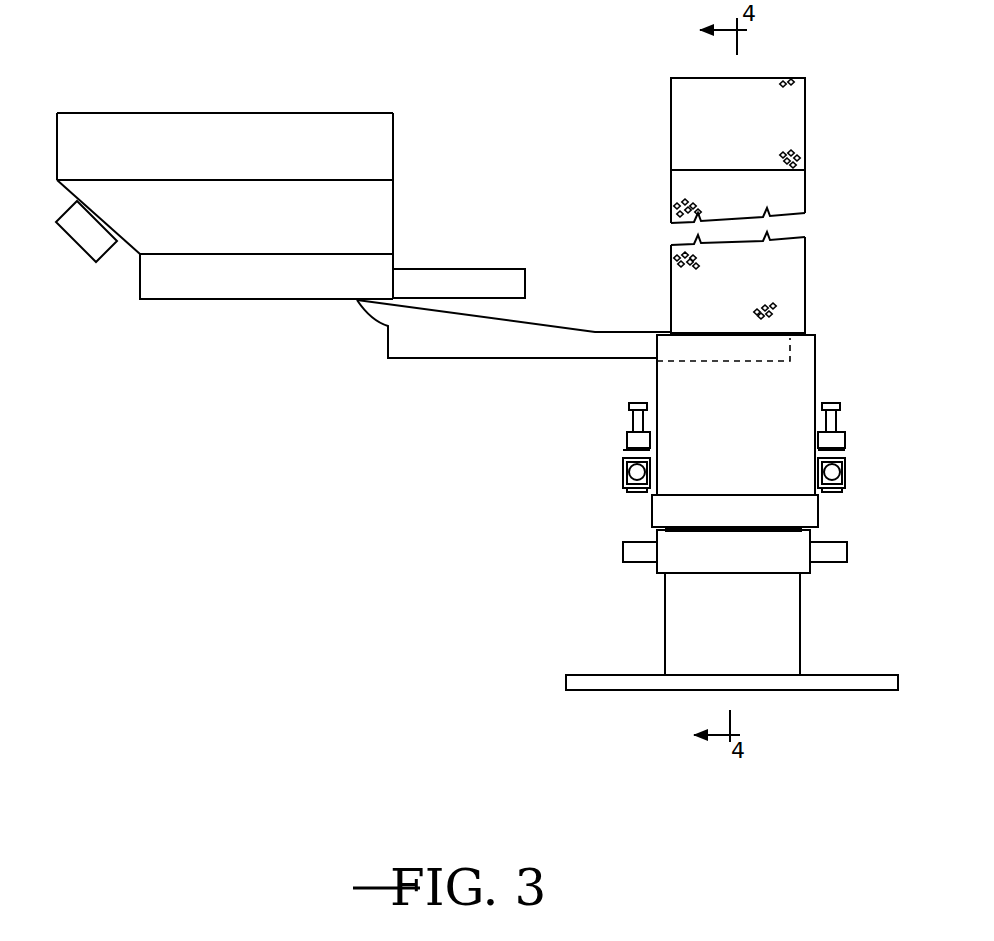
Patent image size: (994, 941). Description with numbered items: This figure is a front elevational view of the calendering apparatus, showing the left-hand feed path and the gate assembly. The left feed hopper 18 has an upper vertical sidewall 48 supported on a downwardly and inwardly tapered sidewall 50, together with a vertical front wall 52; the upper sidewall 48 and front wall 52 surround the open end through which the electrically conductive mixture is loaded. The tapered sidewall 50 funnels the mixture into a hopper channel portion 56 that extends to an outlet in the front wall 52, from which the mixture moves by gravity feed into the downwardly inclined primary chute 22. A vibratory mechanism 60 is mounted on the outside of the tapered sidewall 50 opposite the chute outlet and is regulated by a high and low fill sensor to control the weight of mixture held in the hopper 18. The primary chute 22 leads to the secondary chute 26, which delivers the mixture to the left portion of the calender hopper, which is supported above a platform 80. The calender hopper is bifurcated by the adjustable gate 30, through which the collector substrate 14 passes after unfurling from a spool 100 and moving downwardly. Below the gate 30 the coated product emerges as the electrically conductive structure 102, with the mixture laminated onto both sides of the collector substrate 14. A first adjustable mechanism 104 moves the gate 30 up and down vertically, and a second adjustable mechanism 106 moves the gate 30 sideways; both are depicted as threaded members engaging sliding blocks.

The collector substrate 14 is at (785, 278).
The left feed hopper 18 is at (250, 113).
The primary chute 22 is at (440, 267).
The secondary chute 26 is at (505, 362).
The adjustable gate 30 is at (795, 405).
The upper vertical sidewall 48 is at (158, 137).
The tapered sidewall 50 is at (123, 203).
The vertical front wall 52 is at (395, 157).
The hopper channel portion 56 is at (237, 275).
The vibratory mechanism 60 is at (77, 245).
The platform 80 is at (862, 680).
The spool 100 is at (793, 123).
The electrically conductive structure 102 is at (774, 640).
The first adjustable mechanism 104 is at (616, 424).
The second adjustable mechanism 106 is at (613, 494).